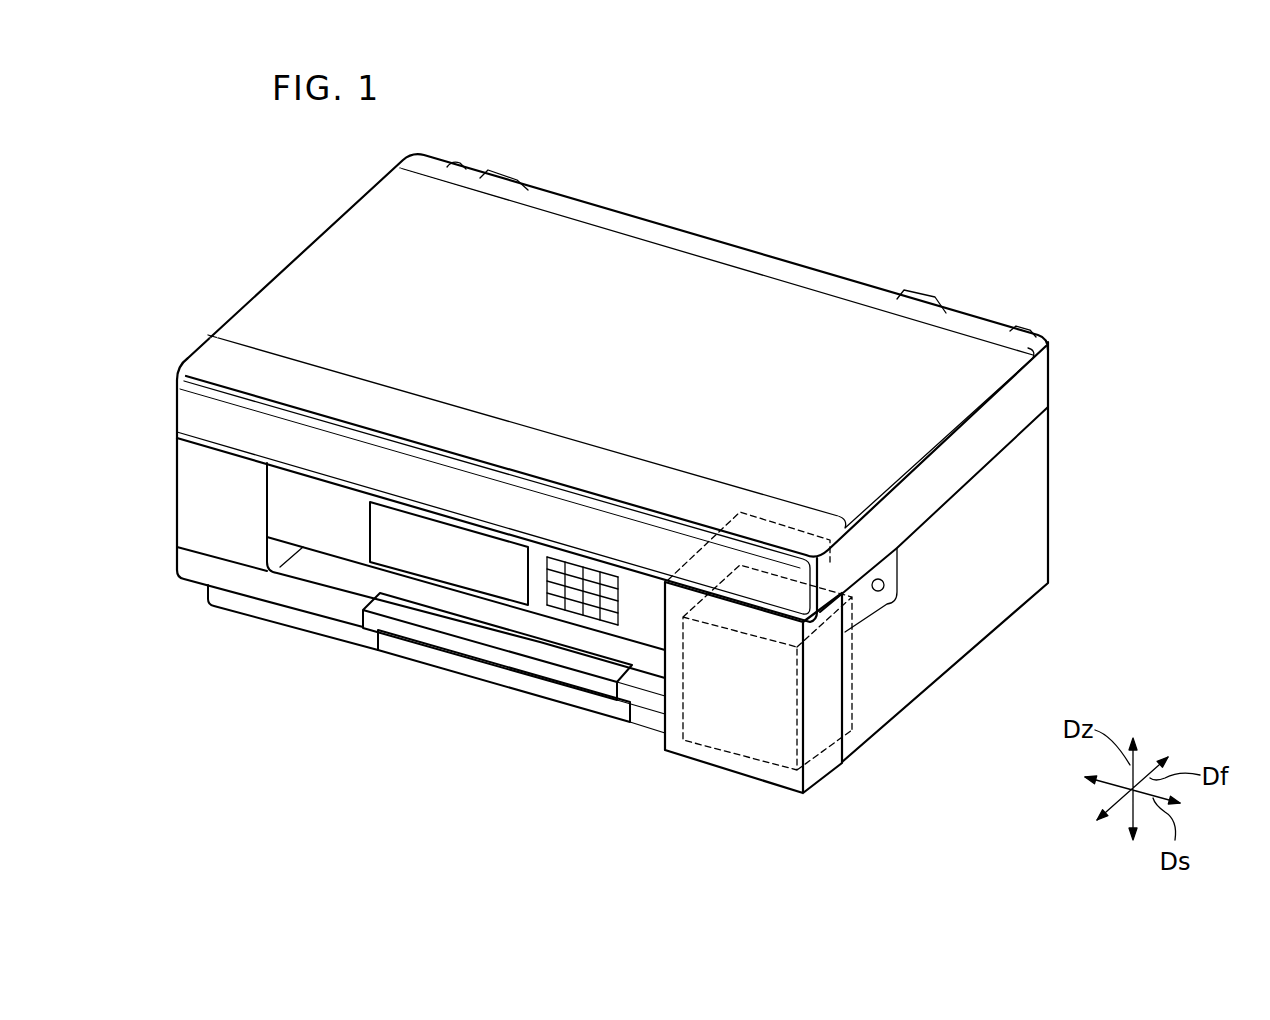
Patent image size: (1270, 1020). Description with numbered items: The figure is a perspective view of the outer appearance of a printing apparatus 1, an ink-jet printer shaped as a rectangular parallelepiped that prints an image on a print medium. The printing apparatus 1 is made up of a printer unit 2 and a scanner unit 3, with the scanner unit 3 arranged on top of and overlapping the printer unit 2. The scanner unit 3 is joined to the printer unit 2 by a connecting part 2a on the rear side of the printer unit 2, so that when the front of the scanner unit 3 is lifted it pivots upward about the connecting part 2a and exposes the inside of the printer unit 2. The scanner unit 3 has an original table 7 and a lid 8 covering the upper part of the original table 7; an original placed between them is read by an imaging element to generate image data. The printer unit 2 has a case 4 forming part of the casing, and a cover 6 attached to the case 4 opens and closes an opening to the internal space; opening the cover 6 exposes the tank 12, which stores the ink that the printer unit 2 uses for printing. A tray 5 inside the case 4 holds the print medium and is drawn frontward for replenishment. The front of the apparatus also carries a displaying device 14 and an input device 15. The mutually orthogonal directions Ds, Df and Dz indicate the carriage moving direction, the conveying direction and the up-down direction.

The printing apparatus 1 is at (893, 191).
The printer unit 2 is at (1050, 460).
The connecting part 2a is at (925, 297).
The scanner unit 3 is at (1050, 376).
The case 4 is at (1050, 543).
The tray 5 is at (403, 662).
The cover 6 is at (681, 752).
The original table 7 is at (253, 320).
The lid 8 is at (315, 273).
The tank 12 is at (753, 740).
The displaying device 14 is at (485, 582).
The input device 15 is at (590, 612).